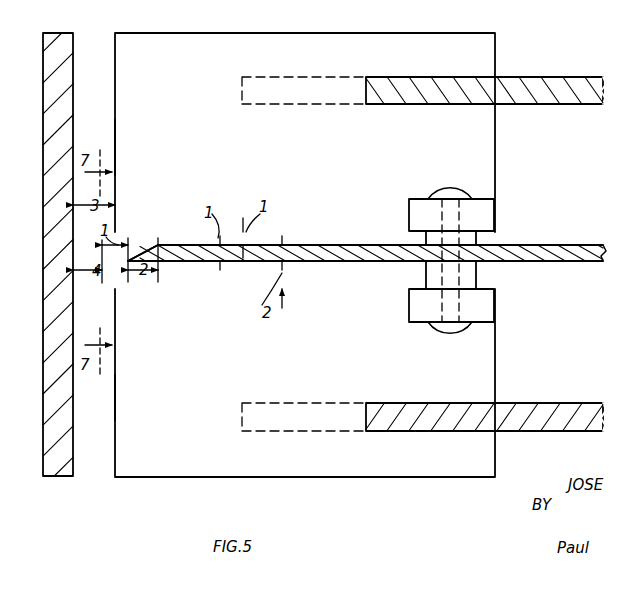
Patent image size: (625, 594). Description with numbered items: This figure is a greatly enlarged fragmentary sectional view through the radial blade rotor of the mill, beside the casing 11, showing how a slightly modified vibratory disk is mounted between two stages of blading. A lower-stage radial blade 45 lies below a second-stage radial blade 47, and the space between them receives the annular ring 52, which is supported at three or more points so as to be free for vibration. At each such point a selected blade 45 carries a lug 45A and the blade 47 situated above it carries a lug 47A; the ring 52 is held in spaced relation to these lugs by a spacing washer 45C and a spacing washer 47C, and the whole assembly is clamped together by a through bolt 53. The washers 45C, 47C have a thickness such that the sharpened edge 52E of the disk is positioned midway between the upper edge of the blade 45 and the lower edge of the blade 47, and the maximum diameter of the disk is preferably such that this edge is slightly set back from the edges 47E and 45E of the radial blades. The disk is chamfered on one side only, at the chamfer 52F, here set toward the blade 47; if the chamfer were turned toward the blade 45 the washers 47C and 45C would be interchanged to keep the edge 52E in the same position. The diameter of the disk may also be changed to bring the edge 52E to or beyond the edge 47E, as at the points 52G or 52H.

The casing 11 is at (57, 362).
The radial blade 45 is at (485, 383).
The lug 45A is at (487, 306).
The spacing washer 45C is at (470, 278).
The edge of radial blade 45E is at (115, 396).
The radial blade 47 is at (199, 50).
The lug 47A is at (492, 207).
The spacing washer 47C is at (470, 238).
The edge of radial blade 47E is at (115, 146).
The annular ring 52 is at (585, 245).
The sharpened edge 52E is at (136, 258).
The chamfer 52F is at (150, 245).
The point 52G is at (116, 262).
The point 52H is at (100, 262).
The through bolt 53 is at (449, 328).